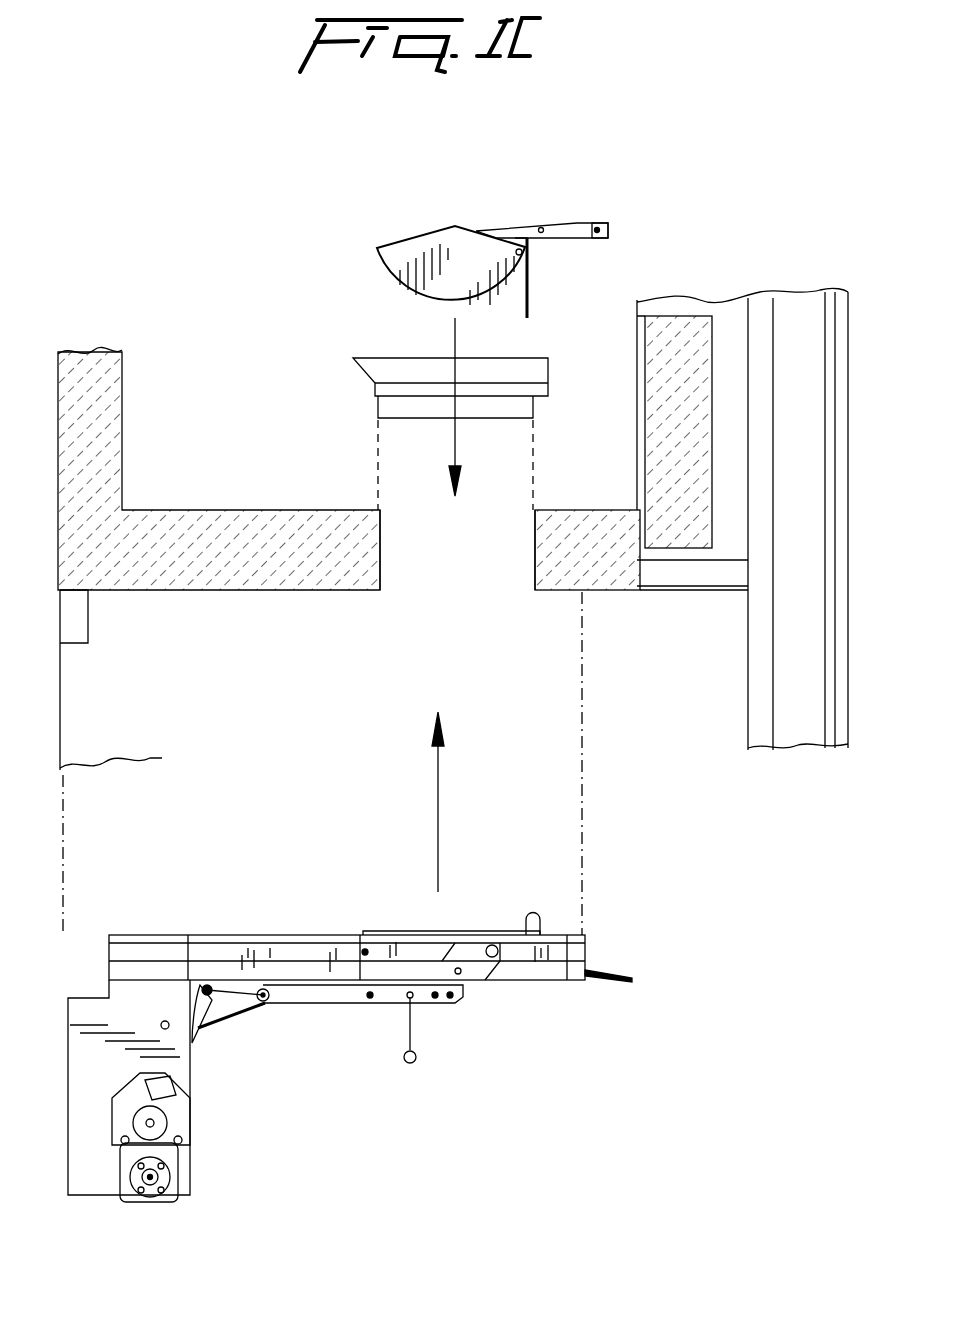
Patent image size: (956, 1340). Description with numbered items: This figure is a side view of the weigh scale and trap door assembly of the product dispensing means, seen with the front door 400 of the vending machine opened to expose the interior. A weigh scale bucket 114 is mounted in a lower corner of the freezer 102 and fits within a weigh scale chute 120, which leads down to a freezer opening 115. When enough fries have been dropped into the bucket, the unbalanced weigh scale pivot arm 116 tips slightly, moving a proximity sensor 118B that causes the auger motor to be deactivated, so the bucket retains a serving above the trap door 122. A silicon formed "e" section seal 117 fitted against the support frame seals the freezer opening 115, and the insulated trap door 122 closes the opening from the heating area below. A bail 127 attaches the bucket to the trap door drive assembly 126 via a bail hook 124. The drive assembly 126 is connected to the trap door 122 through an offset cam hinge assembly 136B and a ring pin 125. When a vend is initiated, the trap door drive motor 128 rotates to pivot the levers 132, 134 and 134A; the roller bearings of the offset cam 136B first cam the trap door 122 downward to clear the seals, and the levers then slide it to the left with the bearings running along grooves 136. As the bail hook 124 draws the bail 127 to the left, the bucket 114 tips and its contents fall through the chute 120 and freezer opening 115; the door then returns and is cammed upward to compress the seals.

The freezer 102 is at (687, 312).
The weigh scale bucket 114 is at (380, 250).
The freezer opening 115 is at (380, 592).
The weigh scale pivot arm 116 is at (560, 226).
The silicon formed "e" section seal 117 is at (370, 931).
The proximity sensor 118B is at (598, 238).
The weigh scale chute 120 is at (352, 364).
The trap door 122 is at (629, 980).
The bail hook 124 is at (531, 912).
The ring pin 125 is at (412, 1027).
The trap door drive assembly 126 is at (190, 1167).
The bail 127 is at (530, 300).
The trap door drive motor 128 is at (147, 1203).
The lever 132 is at (200, 1033).
The lever 134 is at (242, 1005).
The lever 134A is at (338, 1003).
The grooves 136 is at (245, 935).
The offset cam hinge assembly 136B is at (505, 980).
The front door 400 is at (842, 290).